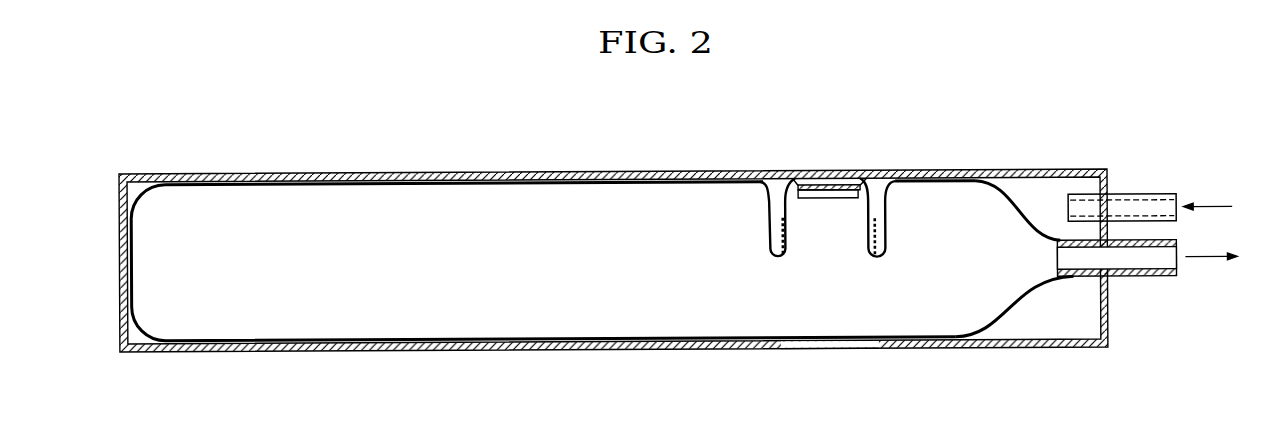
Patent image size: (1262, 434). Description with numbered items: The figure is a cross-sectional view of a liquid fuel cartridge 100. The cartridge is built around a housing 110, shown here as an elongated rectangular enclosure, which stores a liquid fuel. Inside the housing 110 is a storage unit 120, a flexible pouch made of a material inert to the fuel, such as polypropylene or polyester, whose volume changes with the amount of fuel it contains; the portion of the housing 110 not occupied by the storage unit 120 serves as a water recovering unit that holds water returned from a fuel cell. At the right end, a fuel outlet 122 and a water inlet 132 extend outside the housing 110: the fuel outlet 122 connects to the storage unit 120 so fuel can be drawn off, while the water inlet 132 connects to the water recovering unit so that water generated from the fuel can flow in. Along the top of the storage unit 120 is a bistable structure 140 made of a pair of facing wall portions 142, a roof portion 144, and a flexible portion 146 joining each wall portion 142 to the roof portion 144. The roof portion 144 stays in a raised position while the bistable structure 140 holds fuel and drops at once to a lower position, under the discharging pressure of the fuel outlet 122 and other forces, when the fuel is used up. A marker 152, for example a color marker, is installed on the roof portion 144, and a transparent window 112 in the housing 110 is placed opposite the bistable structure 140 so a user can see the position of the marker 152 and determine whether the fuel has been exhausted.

The liquid fuel cartridge 100 is at (326, 121).
The housing 110 is at (613, 298).
The transparent window 112 is at (825, 351).
The storage unit 120 is at (1015, 312).
The fuel outlet 122 is at (1152, 281).
The water inlet 132 is at (1152, 199).
The bistable structure 140 is at (819, 198).
The wall portions 142 is at (870, 251).
The roof portion 144 is at (850, 189).
The flexible portion 146 is at (790, 181).
The marker 152 is at (823, 202).